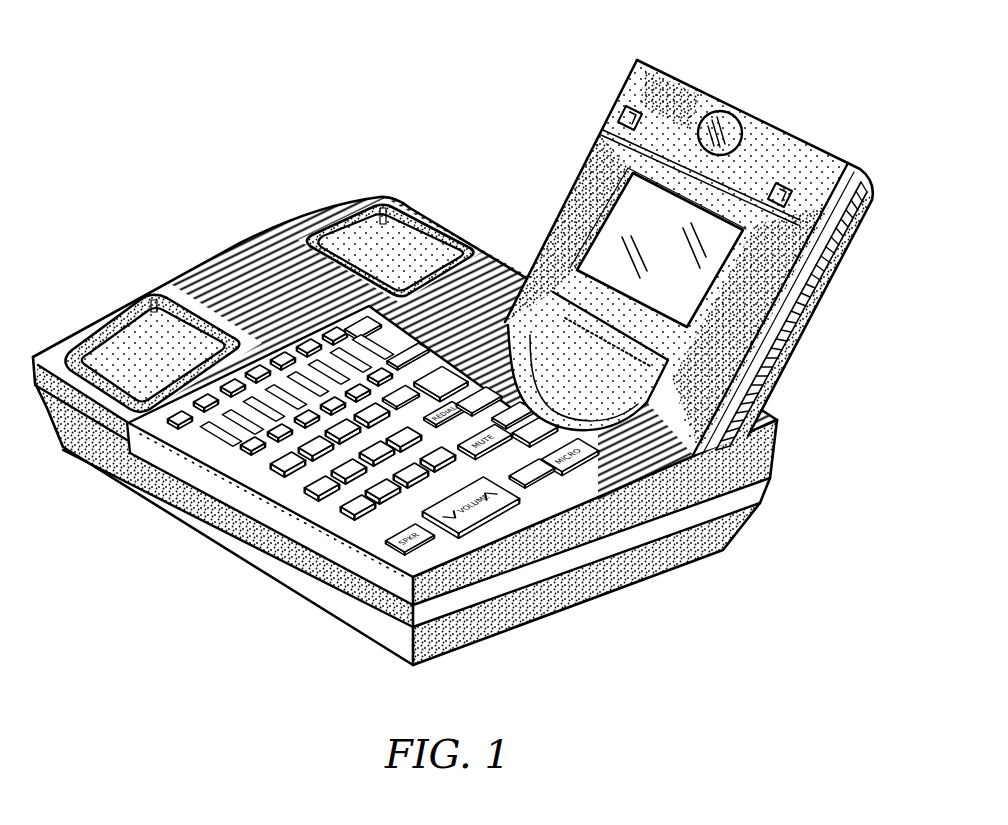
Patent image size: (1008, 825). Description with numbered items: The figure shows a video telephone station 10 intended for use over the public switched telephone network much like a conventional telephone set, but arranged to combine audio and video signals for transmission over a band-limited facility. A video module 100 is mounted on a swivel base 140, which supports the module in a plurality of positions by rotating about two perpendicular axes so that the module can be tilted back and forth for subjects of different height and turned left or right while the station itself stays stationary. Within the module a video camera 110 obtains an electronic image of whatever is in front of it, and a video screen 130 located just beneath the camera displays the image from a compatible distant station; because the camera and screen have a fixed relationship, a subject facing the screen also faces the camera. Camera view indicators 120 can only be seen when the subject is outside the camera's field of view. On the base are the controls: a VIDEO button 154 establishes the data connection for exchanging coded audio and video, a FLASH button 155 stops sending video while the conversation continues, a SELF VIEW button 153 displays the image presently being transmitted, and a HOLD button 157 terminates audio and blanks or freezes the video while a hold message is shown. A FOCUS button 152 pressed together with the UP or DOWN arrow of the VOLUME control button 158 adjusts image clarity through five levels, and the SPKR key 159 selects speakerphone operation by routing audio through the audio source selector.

The video telephone station 10 is at (252, 225).
The video module 100 is at (706, 249).
The video camera 110 is at (731, 122).
The camera view indicators 120 is at (843, 260).
The video screen 130 is at (688, 285).
The swivel base 140 is at (744, 511).
The FOCUS button 152 is at (506, 326).
The SELF VIEW button 153 is at (550, 400).
The VIDEO button 154 is at (623, 382).
The FLASH button 155 is at (400, 422).
The HOLD button 157 is at (562, 477).
The VOLUME control button 158 is at (517, 495).
The SPKR key 159 is at (434, 537).